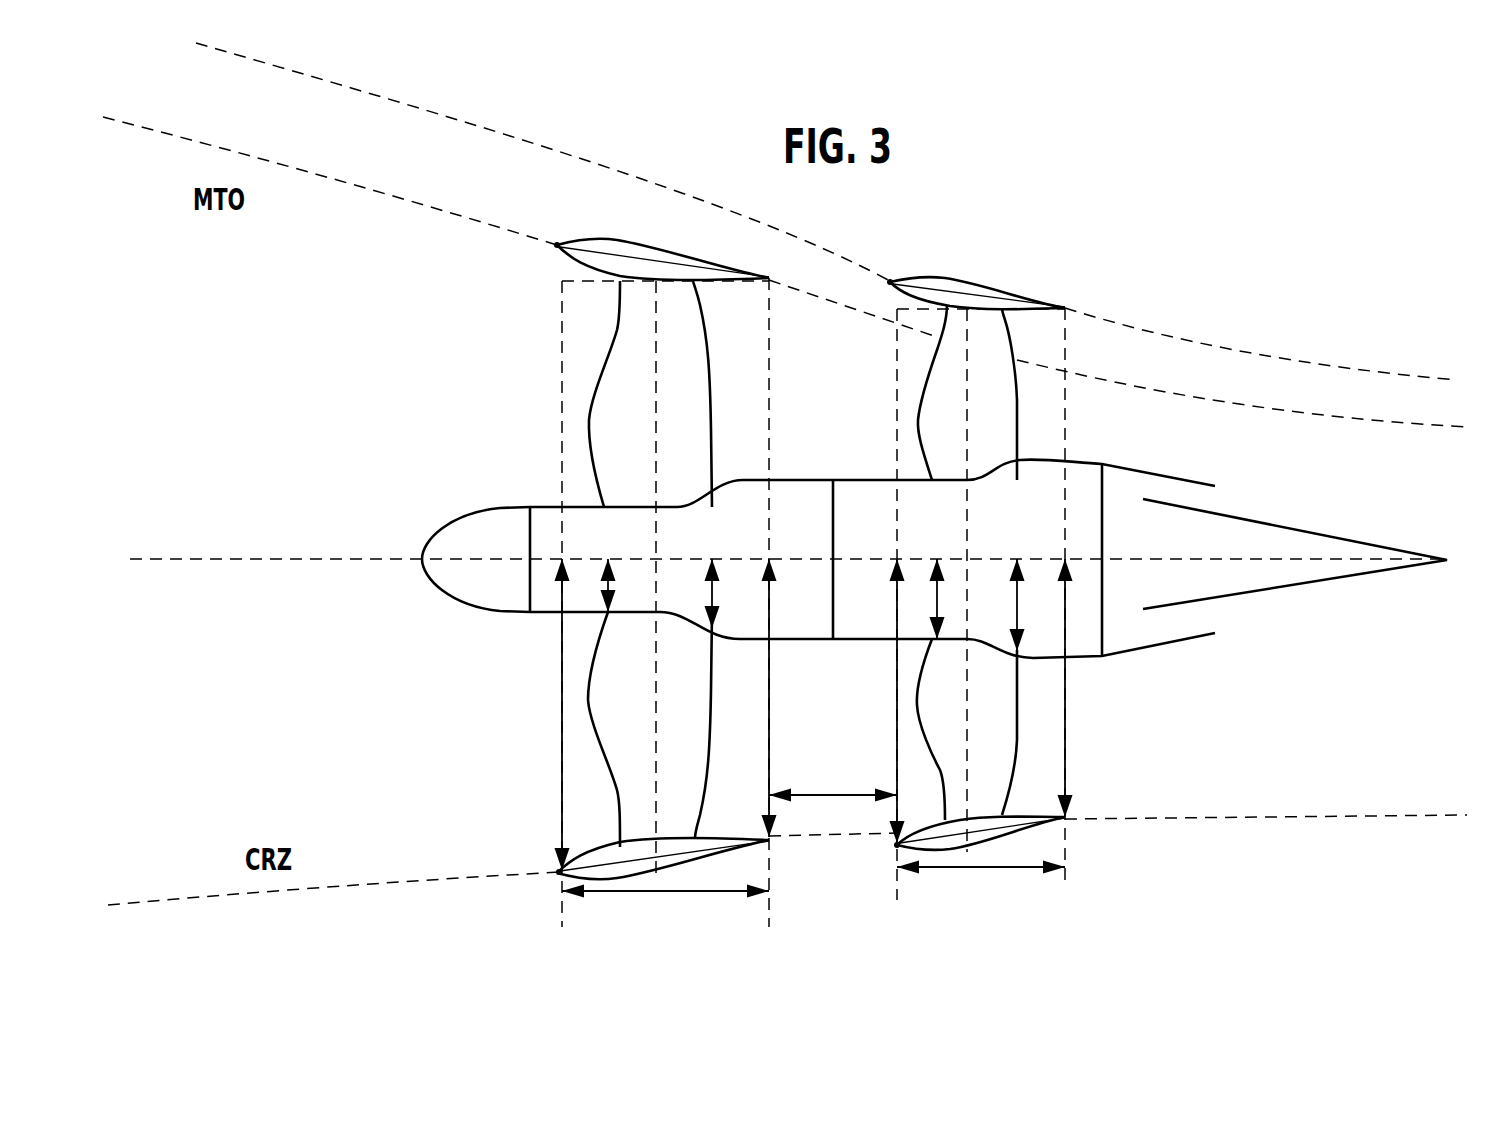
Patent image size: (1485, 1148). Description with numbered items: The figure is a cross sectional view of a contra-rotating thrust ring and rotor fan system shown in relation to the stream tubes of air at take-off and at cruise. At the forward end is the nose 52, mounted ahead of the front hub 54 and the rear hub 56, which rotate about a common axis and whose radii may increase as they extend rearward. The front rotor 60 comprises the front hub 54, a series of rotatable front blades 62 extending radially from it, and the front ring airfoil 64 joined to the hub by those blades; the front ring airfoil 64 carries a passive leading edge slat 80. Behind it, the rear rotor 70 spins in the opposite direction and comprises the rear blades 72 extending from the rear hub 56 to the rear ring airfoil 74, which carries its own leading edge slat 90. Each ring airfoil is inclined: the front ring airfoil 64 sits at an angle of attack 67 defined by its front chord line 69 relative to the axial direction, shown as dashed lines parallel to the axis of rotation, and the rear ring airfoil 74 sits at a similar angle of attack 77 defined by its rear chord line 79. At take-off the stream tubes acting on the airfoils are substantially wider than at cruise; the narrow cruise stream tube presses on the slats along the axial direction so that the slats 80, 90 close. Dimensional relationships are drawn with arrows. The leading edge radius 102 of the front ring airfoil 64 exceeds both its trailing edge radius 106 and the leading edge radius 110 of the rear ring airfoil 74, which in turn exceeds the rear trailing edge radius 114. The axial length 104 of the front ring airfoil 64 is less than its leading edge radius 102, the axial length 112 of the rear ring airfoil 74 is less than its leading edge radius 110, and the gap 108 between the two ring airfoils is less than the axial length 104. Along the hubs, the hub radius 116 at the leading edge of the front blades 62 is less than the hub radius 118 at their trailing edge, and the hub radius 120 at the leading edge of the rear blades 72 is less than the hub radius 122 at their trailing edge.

The nose 52 is at (458, 534).
The front hub 54 is at (550, 520).
The rear hub 56 is at (1086, 482).
The front rotor 60 is at (608, 550).
The front blades 62 is at (612, 777).
The front ring airfoil 64 is at (636, 535).
The angle of attack 67 is at (587, 280).
The front chord line 69 is at (612, 250).
The rear rotor 70 is at (951, 570).
The rear blades 72 is at (1015, 750).
The rear ring airfoil 74 is at (947, 537).
The angle of attack 77 is at (921, 310).
The rear chord line 79 is at (938, 292).
The leading edge slat 80 is at (558, 243).
The leading edge slat 90 is at (888, 280).
The leading edge radius 102 is at (560, 680).
The axial length 104 is at (643, 893).
The trailing edge radius 106 is at (769, 752).
The gap 108 is at (813, 798).
The leading edge radius 110 is at (897, 710).
The axial length 112 is at (990, 868).
The trailing edge radius 114 is at (1065, 690).
The hub radius 116 is at (608, 585).
The hub radius 118 is at (712, 590).
The hub radius 120 is at (937, 603).
The hub radius 122 is at (1017, 620).